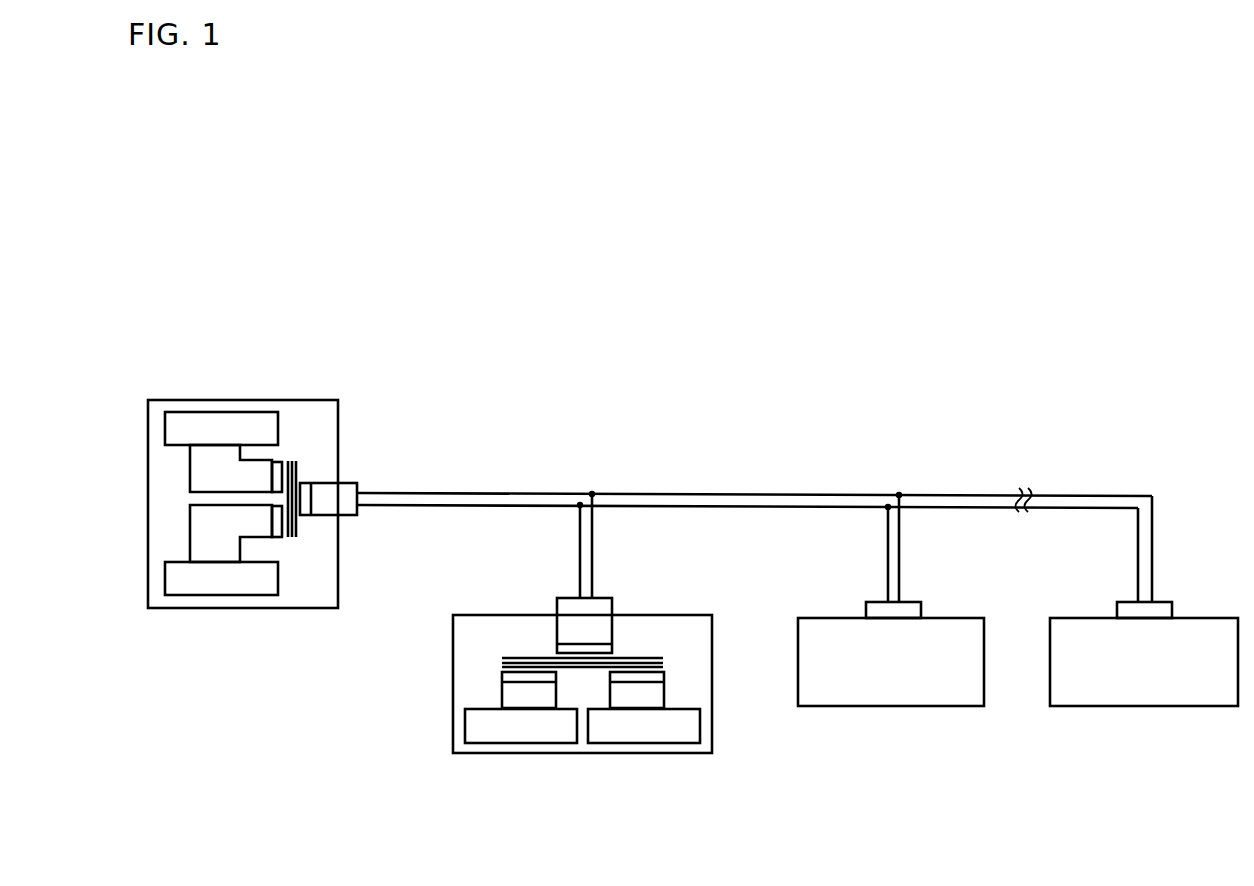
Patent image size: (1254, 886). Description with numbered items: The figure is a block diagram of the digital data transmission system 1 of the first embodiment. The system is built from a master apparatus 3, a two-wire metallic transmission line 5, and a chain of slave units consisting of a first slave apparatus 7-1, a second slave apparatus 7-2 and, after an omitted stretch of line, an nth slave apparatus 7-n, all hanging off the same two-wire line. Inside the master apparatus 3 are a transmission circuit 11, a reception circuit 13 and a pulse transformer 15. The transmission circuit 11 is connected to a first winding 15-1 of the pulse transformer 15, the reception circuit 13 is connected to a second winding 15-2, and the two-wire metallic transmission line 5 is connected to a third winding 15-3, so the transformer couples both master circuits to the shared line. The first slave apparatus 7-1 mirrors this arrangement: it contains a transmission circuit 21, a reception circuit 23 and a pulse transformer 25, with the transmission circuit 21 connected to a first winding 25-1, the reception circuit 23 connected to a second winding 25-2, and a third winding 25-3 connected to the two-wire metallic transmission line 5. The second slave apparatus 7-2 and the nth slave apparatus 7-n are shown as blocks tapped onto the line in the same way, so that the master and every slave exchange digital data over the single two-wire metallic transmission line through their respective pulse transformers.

The digital data transmission system 1 is at (527, 228).
The master apparatus 3 is at (258, 493).
The 2-wire metallic transmission line 5 is at (707, 513).
The first slave apparatus 7-1 is at (573, 685).
The second slave apparatus 7-2 is at (850, 708).
The nth slave apparatus 7-n is at (1125, 708).
The transmission circuit 11 is at (165, 426).
The reception circuit 13 is at (165, 577).
The pulse transformer 15 is at (298, 527).
The first winding 15-1 is at (282, 462).
The second winding 15-2 is at (280, 538).
The third winding 15-3 is at (303, 488).
The transmission circuit 21 is at (480, 745).
The reception circuit 23 is at (575, 753).
The pulse transformer 25 is at (644, 658).
The first winding 25-1 is at (502, 674).
The second winding 25-2 is at (664, 676).
The third winding 25-3 is at (557, 648).